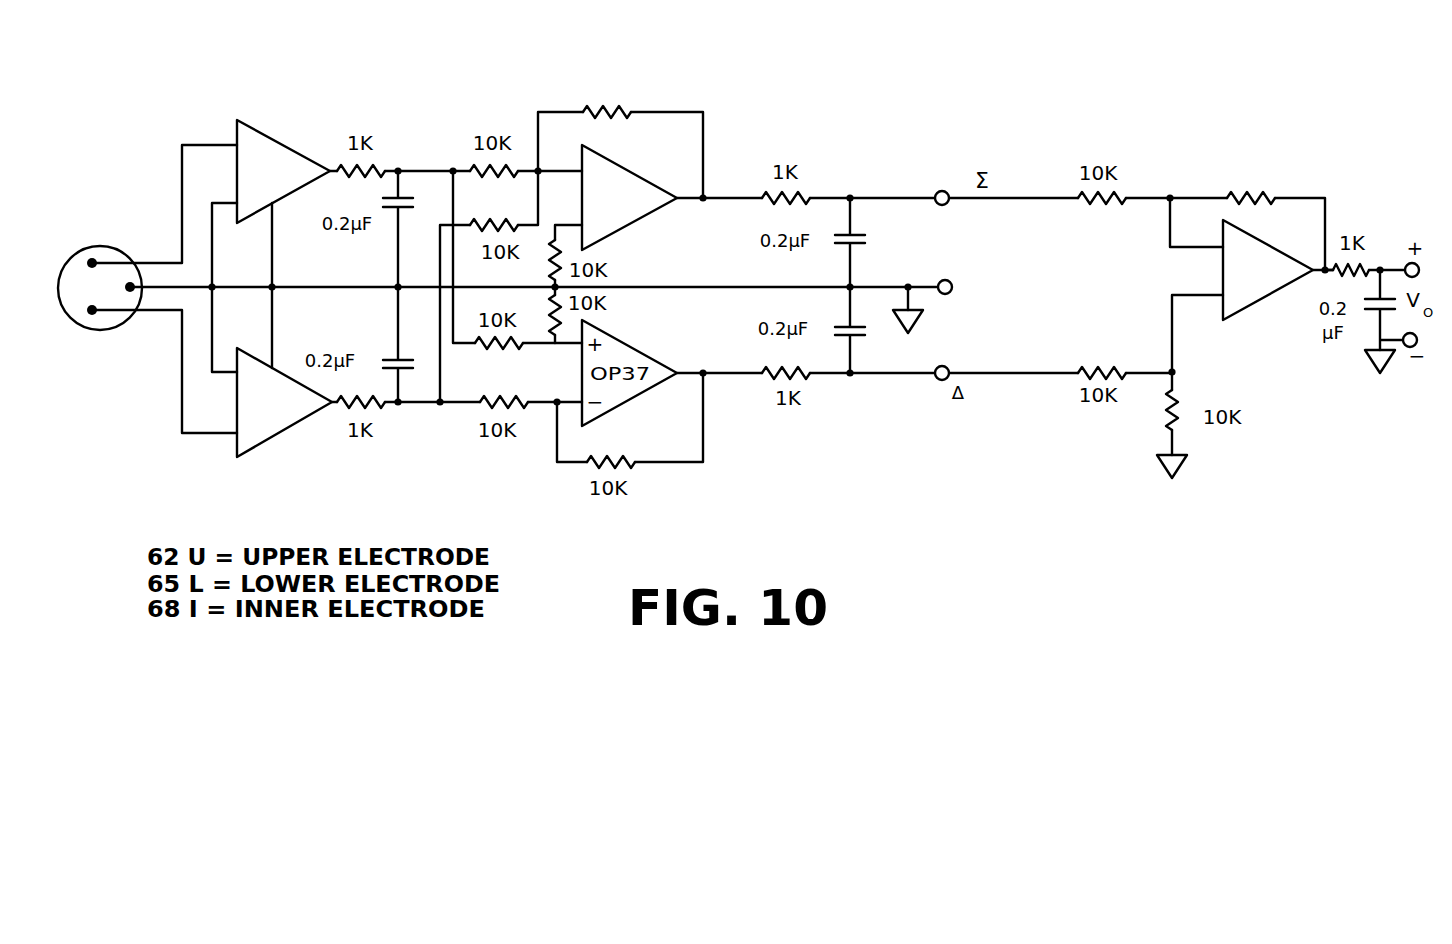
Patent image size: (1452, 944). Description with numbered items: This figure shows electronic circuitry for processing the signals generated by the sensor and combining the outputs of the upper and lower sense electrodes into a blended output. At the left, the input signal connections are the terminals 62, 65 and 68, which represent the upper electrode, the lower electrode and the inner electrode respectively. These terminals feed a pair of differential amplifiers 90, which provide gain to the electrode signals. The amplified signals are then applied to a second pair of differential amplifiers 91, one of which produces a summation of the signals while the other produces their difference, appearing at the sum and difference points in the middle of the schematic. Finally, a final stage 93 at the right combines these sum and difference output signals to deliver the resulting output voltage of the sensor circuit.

The upper electrode terminal 62 is at (92, 260).
The lower electrode terminal 65 is at (130, 285).
The inner electrode terminal 68 is at (92, 312).
The pair of differential amplifiers 90 is at (283, 110).
The second pair of differential amplifiers 91 is at (593, 75).
The final stage 93 is at (1236, 156).